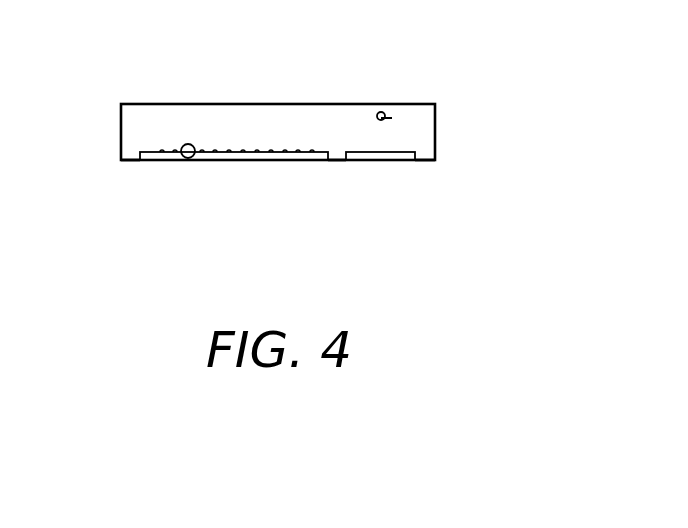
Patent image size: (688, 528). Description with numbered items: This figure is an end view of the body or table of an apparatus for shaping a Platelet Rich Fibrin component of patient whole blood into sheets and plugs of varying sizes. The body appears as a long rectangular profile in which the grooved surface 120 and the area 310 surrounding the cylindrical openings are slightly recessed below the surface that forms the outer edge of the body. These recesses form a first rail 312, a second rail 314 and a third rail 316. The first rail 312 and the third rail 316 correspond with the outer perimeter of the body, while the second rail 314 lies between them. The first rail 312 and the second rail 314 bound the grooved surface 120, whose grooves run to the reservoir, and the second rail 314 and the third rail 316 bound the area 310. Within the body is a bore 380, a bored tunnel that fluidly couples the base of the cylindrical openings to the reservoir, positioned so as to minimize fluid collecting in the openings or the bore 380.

The area surrounding the cylindrical openings 310 is at (395, 151).
The first rail 312 is at (132, 162).
The grooved surface 120 is at (242, 162).
The second rail 314 is at (337, 162).
The third rail 316 is at (424, 162).
The bore 380 is at (381, 112).